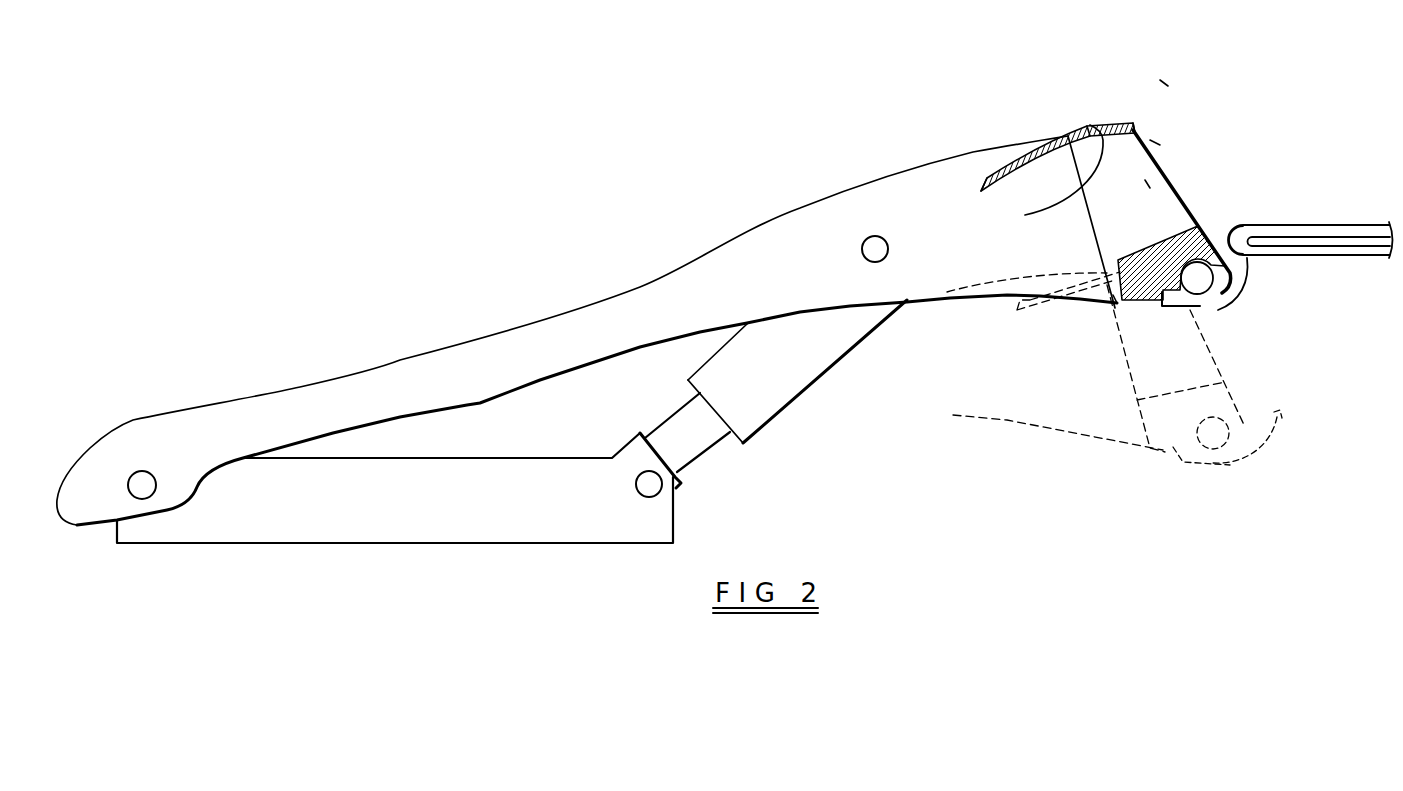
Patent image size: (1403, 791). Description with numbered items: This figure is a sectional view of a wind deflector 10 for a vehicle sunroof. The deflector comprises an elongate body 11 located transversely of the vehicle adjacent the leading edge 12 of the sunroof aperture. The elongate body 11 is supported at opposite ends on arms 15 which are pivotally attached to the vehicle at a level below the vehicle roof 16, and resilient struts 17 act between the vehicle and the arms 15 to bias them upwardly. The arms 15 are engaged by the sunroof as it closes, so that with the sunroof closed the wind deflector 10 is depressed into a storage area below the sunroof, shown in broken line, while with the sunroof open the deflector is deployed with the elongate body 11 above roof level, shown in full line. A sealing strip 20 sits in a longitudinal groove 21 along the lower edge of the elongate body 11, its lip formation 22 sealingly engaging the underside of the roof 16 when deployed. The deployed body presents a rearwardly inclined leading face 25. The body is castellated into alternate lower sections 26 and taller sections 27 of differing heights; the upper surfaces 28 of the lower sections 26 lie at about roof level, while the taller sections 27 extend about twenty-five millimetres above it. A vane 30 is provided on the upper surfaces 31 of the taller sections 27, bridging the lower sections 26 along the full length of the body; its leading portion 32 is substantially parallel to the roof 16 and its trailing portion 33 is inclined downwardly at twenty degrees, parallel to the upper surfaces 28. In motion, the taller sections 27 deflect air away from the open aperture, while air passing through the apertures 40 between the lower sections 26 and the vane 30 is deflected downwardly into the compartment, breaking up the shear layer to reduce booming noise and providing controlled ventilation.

The wind deflector 10 is at (1166, 80).
The elongate body 11 is at (1168, 195).
The leading edge 12 is at (1245, 230).
The arms 15 is at (660, 293).
The vehicle roof 16 is at (1363, 225).
The resilient struts 17 is at (770, 398).
The sealing strip 20 is at (1195, 283).
The longitudinal groove 21 is at (1227, 297).
The lip formation 22 is at (1258, 266).
The leading face 25 is at (1158, 140).
The lower sections 26 is at (1113, 295).
The taller sections 27 is at (1092, 153).
The upper surfaces of lower sections 28 is at (1160, 242).
The vane 30 is at (1080, 128).
The upper surfaces of taller sections 31 is at (1044, 179).
The leading portion of vane 32 is at (1117, 127).
The trailing portion of vane 33 is at (995, 175).
The apertures 40 is at (1147, 182).